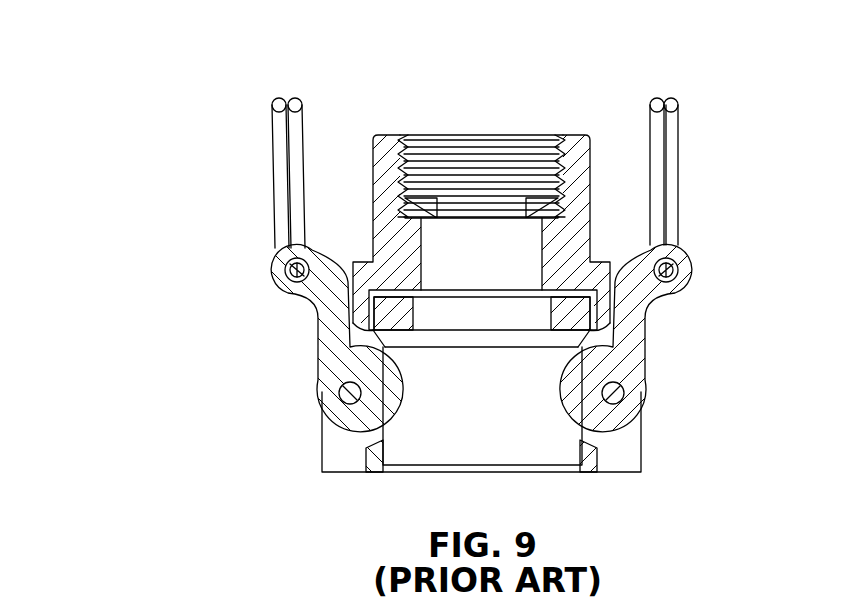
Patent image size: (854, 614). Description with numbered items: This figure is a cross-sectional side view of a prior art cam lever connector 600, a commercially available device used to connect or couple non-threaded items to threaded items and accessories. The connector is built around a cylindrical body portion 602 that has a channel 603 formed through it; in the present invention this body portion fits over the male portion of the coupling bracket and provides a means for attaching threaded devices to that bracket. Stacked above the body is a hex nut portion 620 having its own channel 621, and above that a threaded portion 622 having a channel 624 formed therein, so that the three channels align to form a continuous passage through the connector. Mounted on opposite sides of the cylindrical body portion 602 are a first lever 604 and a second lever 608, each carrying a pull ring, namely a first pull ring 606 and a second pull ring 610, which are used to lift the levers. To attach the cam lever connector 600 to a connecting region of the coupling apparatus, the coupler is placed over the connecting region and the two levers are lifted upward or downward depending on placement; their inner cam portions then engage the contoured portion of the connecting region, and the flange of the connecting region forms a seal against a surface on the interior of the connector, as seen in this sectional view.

The cam lever connector 600 is at (188, 144).
The cylindrical body portion 602 is at (333, 474).
The channel 603 is at (506, 414).
The first lever 604 is at (297, 303).
The first pull ring 606 is at (278, 97).
The second lever 608 is at (677, 290).
The second pull ring 610 is at (674, 97).
The hex nut portion 620 is at (580, 134).
The channel 621 is at (506, 274).
The threaded portion 622 is at (401, 133).
The channel 624 is at (511, 150).